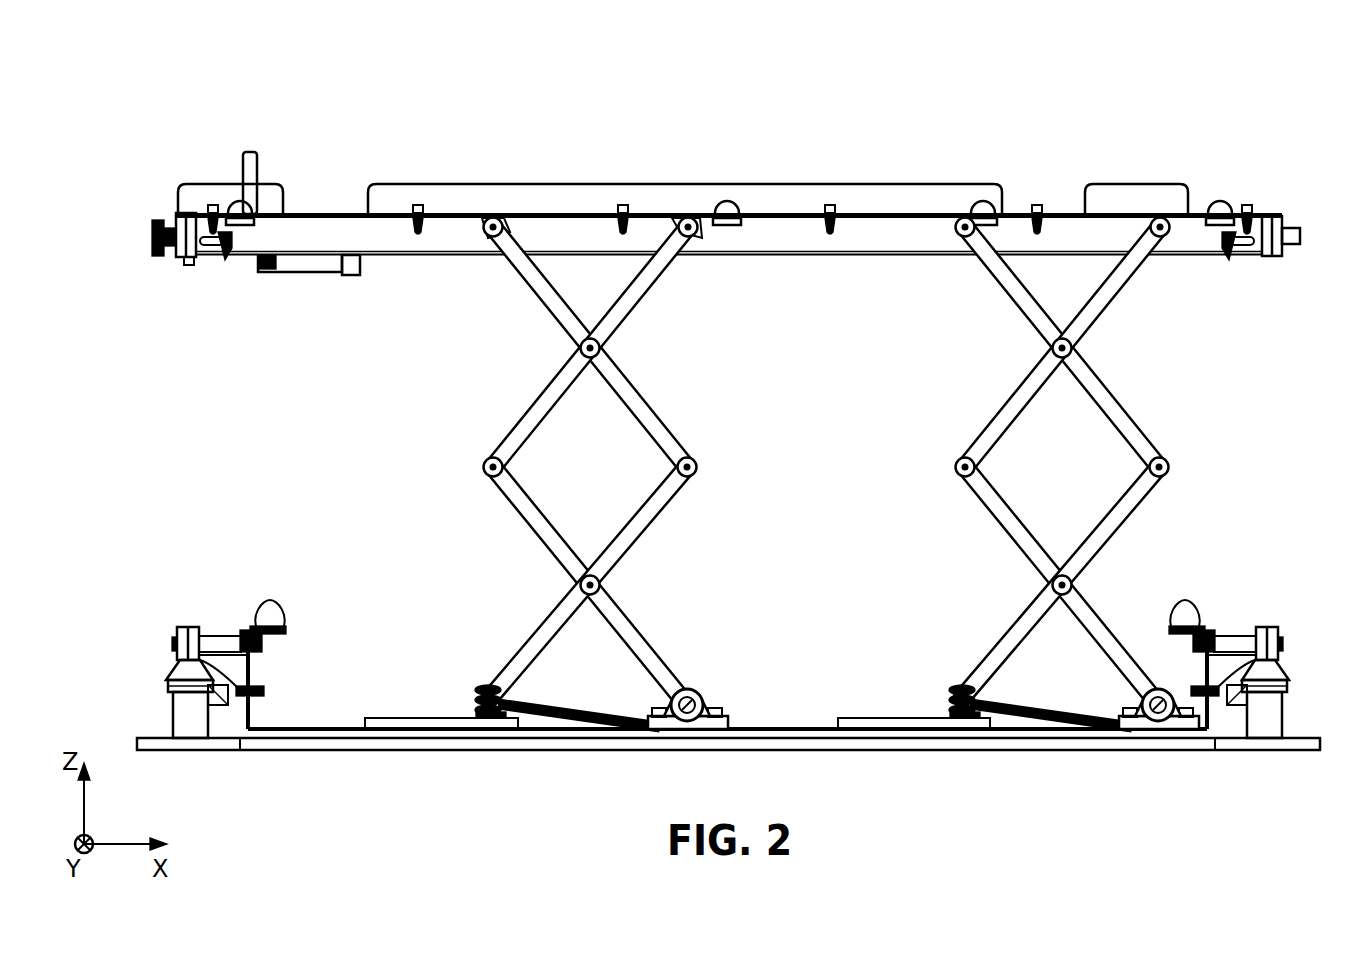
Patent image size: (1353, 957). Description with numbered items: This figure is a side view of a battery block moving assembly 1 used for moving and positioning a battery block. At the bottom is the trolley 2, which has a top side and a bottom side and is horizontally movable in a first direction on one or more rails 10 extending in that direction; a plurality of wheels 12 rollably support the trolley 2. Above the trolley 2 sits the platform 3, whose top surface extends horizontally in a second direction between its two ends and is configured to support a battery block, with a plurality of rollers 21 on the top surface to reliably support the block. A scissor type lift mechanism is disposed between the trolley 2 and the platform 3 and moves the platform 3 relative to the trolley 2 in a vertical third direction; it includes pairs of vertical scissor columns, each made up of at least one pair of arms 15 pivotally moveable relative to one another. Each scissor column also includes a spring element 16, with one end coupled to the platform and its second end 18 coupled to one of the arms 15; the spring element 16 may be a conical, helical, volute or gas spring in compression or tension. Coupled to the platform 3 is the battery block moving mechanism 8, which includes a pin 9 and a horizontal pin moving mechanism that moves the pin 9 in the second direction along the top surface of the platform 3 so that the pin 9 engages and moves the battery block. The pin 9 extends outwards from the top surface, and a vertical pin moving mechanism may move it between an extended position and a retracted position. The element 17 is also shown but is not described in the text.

The battery block moving assembly 1 is at (1288, 133).
The trolley 2 is at (1050, 732).
The platform 3 is at (422, 190).
The battery block moving mechanism 8 is at (303, 263).
The pin 9 is at (247, 158).
The rail 10 is at (1265, 715).
The wheels 12 is at (193, 635).
The arms 15 is at (990, 435).
The spring element 16 is at (558, 729).
The spring element 17 is at (485, 690).
The second end 18 is at (712, 690).
The rollers 21 is at (730, 207).